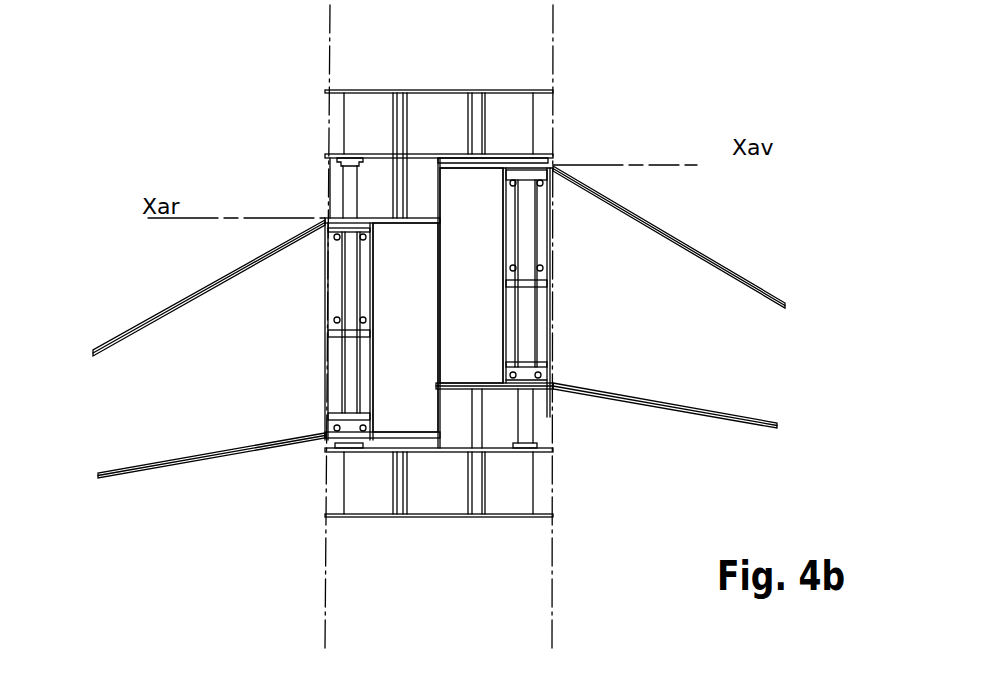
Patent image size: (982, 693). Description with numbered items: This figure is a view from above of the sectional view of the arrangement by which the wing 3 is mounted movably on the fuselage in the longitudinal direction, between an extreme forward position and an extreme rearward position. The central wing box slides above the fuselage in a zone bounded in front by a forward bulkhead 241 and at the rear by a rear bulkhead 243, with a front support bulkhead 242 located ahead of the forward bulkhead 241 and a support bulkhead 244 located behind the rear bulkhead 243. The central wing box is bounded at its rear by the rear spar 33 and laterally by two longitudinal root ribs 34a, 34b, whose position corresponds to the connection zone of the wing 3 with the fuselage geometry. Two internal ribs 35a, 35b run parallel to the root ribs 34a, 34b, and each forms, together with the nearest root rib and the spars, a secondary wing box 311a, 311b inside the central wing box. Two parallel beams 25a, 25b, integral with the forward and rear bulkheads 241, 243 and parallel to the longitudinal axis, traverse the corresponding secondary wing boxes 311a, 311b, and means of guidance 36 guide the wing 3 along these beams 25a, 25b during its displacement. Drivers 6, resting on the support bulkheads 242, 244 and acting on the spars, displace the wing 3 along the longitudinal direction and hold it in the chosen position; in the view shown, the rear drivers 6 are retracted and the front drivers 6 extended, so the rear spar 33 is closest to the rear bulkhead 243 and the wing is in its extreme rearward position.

The wing 3 is at (735, 380).
The drivers 6 is at (400, 125).
The beam 25a is at (527, 428).
The beam 25b is at (347, 178).
The rear spar 33 is at (457, 381).
The root rib 34a is at (553, 192).
The root rib 34b is at (323, 269).
The internal rib 35a is at (507, 193).
The internal rib 35b is at (377, 245).
The means of guidance 36 is at (543, 204).
The forward bulkhead 241 is at (503, 156).
The front support bulkhead 242 is at (354, 90).
The rear bulkhead 243 is at (353, 458).
The support bulkhead 244 is at (362, 520).
The secondary wing box 311a is at (543, 324).
The secondary wing box 311b is at (323, 382).